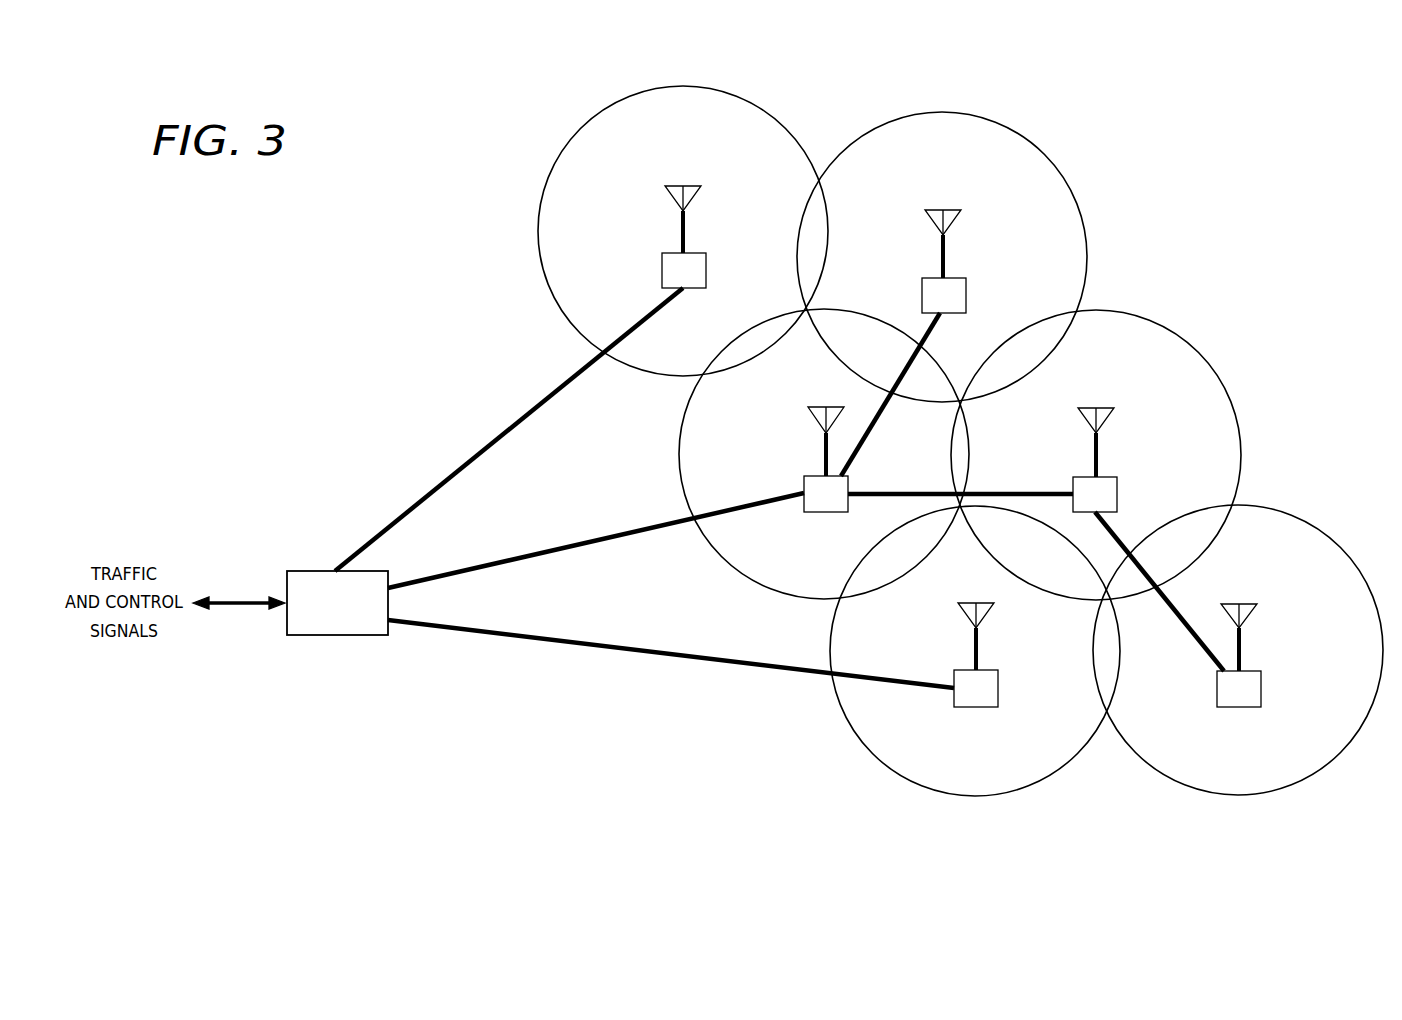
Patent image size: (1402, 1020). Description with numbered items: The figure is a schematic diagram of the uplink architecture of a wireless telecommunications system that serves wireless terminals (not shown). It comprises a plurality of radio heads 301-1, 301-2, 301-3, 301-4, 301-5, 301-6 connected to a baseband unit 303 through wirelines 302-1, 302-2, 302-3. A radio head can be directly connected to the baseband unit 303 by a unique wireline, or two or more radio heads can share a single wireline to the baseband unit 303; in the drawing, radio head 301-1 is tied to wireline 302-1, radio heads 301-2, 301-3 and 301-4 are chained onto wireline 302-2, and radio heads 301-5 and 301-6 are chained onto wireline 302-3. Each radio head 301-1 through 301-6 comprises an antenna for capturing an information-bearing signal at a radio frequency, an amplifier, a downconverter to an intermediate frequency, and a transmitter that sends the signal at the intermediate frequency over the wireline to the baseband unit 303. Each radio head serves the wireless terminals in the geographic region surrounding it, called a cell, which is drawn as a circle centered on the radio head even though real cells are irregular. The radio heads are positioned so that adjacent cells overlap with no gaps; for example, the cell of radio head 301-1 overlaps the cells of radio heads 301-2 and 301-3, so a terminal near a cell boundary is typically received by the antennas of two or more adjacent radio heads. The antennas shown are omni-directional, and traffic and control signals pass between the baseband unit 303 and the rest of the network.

The radio head 301-1 is at (688, 234).
The radio head 301-2 is at (948, 258).
The radio head 301-3 is at (822, 455).
The radio head 301-4 is at (1101, 456).
The radio head 301-5 is at (981, 651).
The radio head 301-6 is at (1244, 651).
The wireline 302-1 is at (430, 492).
The wireline 302-2 is at (501, 562).
The wireline 302-3 is at (524, 637).
The baseband unit 303 is at (307, 571).